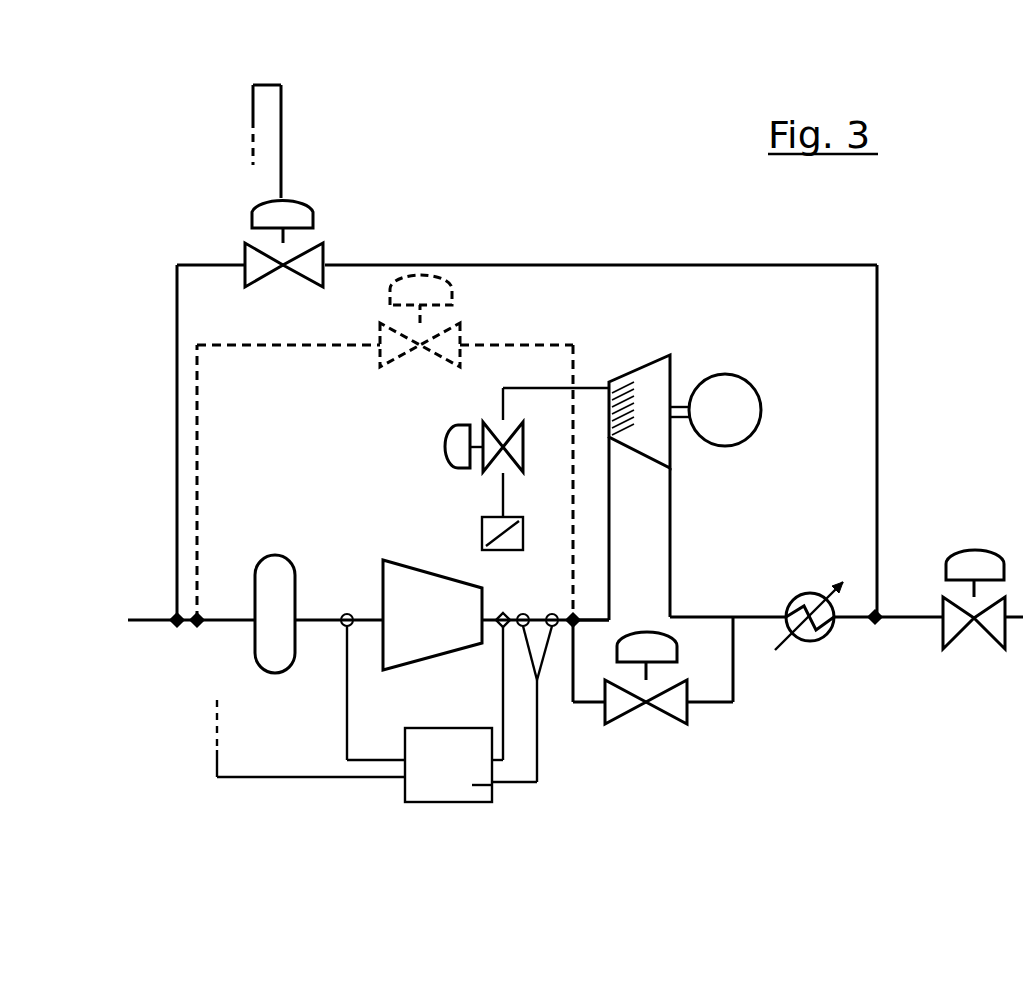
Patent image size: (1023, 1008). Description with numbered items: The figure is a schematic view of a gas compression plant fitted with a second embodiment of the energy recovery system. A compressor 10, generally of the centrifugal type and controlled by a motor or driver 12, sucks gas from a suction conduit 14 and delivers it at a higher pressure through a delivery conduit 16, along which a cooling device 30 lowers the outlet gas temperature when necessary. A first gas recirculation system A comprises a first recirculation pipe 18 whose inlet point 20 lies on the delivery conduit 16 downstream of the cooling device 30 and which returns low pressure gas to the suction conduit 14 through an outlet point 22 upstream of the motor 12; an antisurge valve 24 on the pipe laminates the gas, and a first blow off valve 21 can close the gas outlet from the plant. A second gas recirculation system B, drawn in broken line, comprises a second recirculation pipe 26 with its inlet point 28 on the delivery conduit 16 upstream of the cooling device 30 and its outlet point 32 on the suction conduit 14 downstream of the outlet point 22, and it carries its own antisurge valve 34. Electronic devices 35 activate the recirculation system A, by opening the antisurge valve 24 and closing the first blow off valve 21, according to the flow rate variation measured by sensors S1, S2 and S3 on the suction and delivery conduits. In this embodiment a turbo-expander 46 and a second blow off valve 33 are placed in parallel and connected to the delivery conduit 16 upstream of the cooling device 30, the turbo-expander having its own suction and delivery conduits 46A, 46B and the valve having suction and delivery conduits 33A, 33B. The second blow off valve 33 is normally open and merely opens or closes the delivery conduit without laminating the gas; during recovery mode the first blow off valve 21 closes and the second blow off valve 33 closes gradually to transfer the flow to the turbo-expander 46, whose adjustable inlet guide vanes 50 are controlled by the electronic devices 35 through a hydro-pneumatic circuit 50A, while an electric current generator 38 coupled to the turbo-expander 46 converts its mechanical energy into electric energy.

The compressor 10 is at (410, 657).
The motor or driver 12 is at (275, 675).
The suction conduit 14 is at (318, 618).
The delivery conduit 16 is at (590, 619).
The first recirculation pipe 18 is at (716, 263).
The inlet point 20 is at (873, 625).
The first blow off valve 21 is at (988, 645).
The outlet point 22 is at (178, 628).
The antisurge valve 24 is at (325, 253).
The second recirculation pipe 26 is at (336, 345).
The inlet point 28 is at (578, 623).
The cooling device 30 is at (806, 642).
The outlet point 32 is at (198, 628).
The second blow off valve 33 is at (665, 722).
The suction conduit 33A is at (585, 703).
The delivery conduit 33B is at (736, 700).
The antisurge valve 34 is at (462, 340).
The electronic devices 35 is at (493, 785).
The electric current generator 38 is at (756, 386).
The turbo-expander 46 is at (612, 382).
The suction conduit 46A is at (612, 562).
The delivery conduit 46B is at (672, 580).
The adjustable inlet guide vanes 50 is at (632, 395).
The hydro-pneumatic circuit 50A is at (470, 492).
The first gas recirculation system A is at (884, 300).
The second gas recirculation system B is at (512, 352).
The sensor S1 is at (348, 613).
The sensor S2 is at (523, 613).
The sensor S3 is at (553, 613).